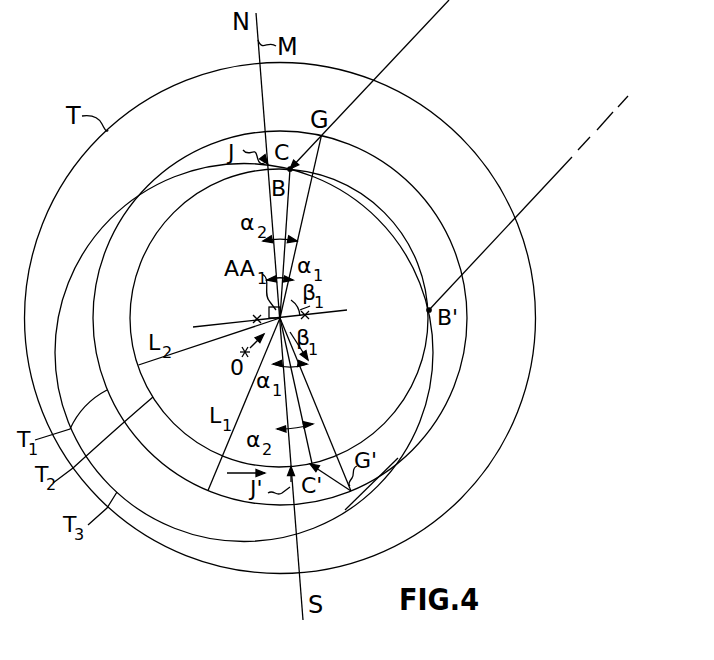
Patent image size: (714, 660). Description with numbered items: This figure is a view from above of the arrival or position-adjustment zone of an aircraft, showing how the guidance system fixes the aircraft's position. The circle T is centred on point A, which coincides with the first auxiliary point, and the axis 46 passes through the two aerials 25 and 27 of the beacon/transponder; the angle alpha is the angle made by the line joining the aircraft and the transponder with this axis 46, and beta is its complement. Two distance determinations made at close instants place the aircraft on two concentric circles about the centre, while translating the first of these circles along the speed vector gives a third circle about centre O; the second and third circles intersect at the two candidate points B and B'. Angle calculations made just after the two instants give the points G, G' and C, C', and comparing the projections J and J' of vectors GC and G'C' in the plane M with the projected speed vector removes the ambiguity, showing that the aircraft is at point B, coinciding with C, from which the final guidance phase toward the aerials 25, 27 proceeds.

The axis 46 is at (204, 323).
The aerial 25 is at (257, 319).
The aerial 27 is at (307, 316).